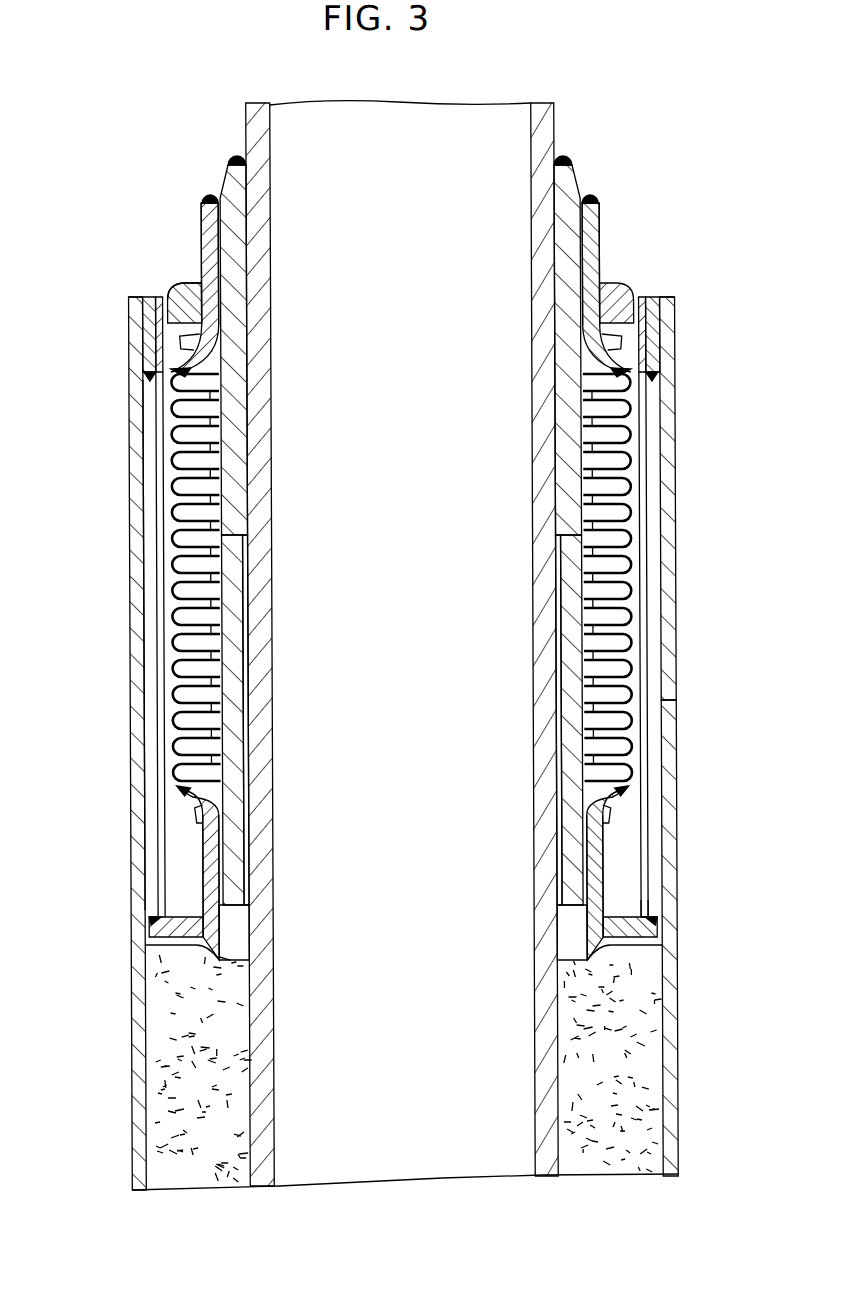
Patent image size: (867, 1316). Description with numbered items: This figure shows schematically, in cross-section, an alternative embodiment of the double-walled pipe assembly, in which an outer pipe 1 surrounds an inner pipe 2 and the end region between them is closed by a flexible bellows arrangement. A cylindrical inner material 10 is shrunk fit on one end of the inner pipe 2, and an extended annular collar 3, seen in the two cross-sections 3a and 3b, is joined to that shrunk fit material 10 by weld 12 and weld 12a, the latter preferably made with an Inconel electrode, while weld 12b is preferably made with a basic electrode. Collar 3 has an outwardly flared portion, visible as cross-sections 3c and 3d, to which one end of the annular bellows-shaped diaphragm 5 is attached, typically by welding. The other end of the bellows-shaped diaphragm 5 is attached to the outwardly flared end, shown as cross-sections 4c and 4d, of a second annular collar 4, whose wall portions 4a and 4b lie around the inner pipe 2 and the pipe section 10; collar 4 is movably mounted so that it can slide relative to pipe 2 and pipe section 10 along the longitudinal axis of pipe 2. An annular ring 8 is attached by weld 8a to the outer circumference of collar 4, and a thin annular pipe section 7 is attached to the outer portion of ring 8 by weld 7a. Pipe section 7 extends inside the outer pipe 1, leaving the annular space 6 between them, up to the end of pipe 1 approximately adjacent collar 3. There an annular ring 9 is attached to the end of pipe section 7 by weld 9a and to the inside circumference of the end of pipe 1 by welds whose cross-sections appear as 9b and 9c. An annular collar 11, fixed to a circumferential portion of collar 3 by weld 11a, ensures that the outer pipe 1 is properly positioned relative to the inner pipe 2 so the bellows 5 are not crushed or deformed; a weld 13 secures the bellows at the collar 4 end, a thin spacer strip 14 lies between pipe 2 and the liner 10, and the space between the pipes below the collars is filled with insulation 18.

The outer pipe 1 is at (138, 1015).
The inner pipe 2 is at (262, 1048).
The annular collar 3 is at (603, 208).
The cross-section of annular collar 3a is at (203, 228).
The cross-section of annular collar 3b is at (603, 243).
The outwardly flared portion of collar 3c is at (181, 345).
The outwardly flared portion of collar 3d is at (623, 345).
The annular-shaped collar 4 is at (598, 950).
The lower sleeve wall portion 4a is at (208, 860).
The lower sleeve wall portion 4b is at (606, 850).
The outwardly flared end of collar 4c is at (190, 805).
The outwardly flared end of collar 4d is at (625, 795).
The bellows-shaped diaphragm 5 is at (195, 598).
The annular space 6 is at (155, 673).
The thin annular-shaped pipe section 7 is at (160, 548).
The weld 7a is at (648, 905).
The annular ring 8 is at (150, 935).
The weld 8a is at (648, 928).
The annular-shaped ring 9 is at (140, 332).
The weld 9a is at (152, 376).
The weld 9b is at (130, 298).
The weld 9c is at (158, 298).
The inner material 10 is at (238, 410).
The annular-shaped collar 11 is at (175, 300).
The weld 11a is at (196, 285).
The weld 12 is at (182, 373).
The weld 12a is at (589, 198).
The weld 12b is at (557, 160).
The weld 13 is at (178, 790).
The spacer strip 14 is at (248, 540).
The thermal insulation 18 is at (175, 1075).